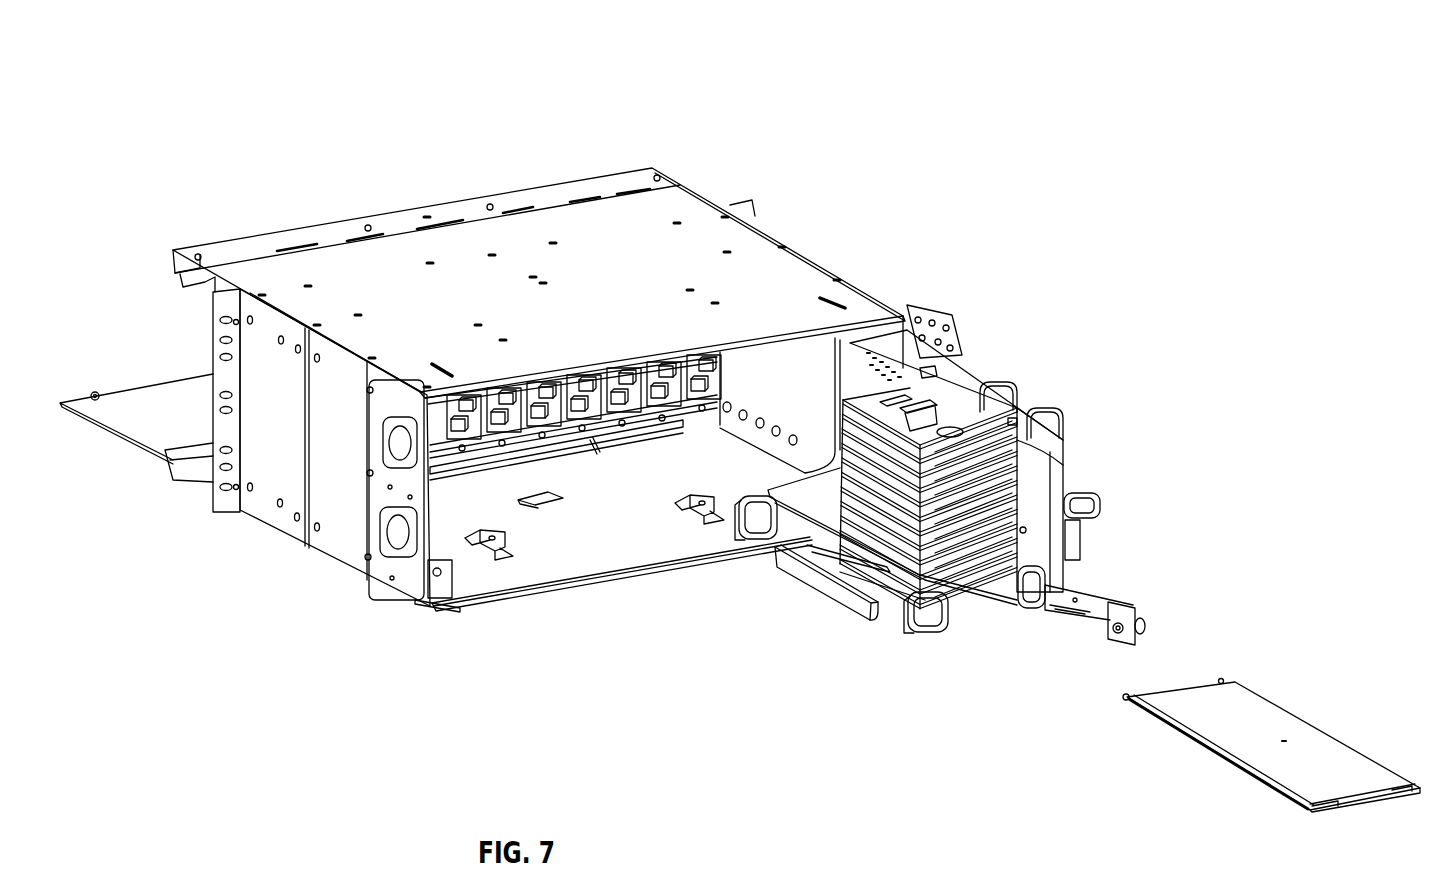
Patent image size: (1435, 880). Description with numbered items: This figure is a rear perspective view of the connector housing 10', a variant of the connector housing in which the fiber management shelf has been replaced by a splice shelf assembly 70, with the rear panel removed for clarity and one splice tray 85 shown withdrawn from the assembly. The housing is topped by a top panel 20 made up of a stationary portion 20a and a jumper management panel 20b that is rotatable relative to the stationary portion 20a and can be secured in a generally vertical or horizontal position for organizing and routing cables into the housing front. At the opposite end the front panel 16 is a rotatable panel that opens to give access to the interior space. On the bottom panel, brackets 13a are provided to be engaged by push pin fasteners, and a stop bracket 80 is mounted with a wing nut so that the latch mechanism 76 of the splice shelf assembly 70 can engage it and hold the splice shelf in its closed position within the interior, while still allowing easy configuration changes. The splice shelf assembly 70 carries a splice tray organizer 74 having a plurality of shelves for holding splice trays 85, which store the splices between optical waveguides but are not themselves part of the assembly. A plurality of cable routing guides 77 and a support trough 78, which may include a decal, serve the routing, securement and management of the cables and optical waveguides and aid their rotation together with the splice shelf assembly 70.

The connector housing 10' is at (740, 447).
The top panel 20 is at (757, 95).
The stationary portion 20a is at (695, 210).
The jumper management panel 20b is at (637, 178).
The front panel 16 is at (112, 430).
The brackets 13a is at (672, 507).
The stop bracket 80 is at (440, 572).
The cable routing guides 77 is at (1098, 520).
The support trough 78 is at (812, 577).
The splice tray organizer 74 is at (968, 540).
The splice shelf assembly 70 is at (1070, 439).
The latch mechanism 76 is at (1140, 633).
The splice trays 85 is at (1295, 775).